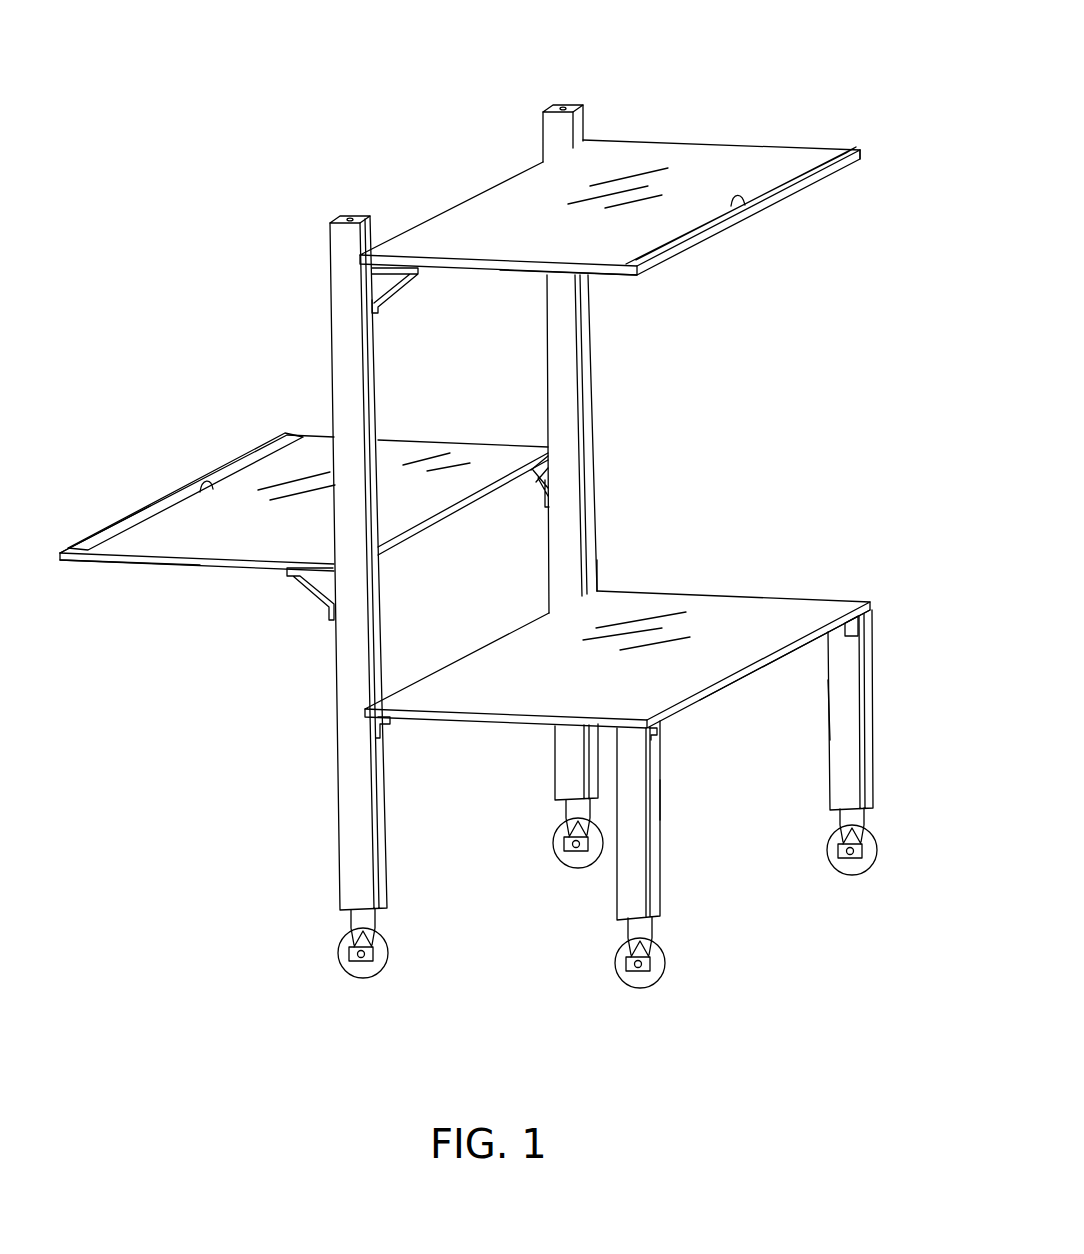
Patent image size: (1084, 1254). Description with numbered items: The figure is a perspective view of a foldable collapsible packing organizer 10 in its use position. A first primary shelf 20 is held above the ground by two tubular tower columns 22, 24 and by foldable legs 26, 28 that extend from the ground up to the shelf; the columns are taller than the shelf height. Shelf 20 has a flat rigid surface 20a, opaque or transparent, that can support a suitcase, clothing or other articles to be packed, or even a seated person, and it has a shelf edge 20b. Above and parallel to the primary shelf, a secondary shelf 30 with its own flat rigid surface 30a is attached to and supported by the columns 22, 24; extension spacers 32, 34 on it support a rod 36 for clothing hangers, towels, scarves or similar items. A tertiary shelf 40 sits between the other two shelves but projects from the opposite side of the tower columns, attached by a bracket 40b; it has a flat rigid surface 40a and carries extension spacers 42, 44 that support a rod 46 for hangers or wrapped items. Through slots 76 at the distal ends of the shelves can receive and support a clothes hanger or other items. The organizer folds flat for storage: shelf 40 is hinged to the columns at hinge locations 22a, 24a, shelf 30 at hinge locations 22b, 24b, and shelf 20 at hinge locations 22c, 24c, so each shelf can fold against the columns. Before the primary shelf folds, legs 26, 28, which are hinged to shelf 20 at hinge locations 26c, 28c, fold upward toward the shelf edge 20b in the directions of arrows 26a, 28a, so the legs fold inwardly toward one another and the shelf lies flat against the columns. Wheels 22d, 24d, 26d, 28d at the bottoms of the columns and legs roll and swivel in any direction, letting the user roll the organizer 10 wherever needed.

The foldable collapsible packing organizer 10 is at (393, 148).
The first primary shelf 20 is at (655, 633).
The flat rigid surface 20a is at (765, 595).
The shelf edge 20b is at (790, 643).
The tower column 22 is at (338, 803).
The hinge location 22a is at (330, 562).
The hinge location 22b is at (333, 256).
The hinge location 22c is at (336, 716).
The wheel 22d is at (390, 953).
The tower column 24 is at (556, 765).
The hinge location 24a is at (545, 482).
The hinge location 24b is at (600, 131).
The hinge location 24c is at (602, 585).
The wheel 24d is at (553, 840).
The foldable leg 26 is at (874, 775).
The arrow 26a is at (830, 733).
The hinge location 26c is at (860, 620).
The wheel 26d is at (880, 853).
The foldable leg 28 is at (663, 881).
The arrow 28a is at (686, 760).
The hinge location 28c is at (662, 727).
The wheel 28d is at (670, 965).
The secondary shelf 30 is at (646, 187).
The flat rigid surface 30a is at (633, 152).
The extension spacer 32 is at (638, 277).
The extension spacer 34 is at (862, 151).
The rod 36 is at (775, 199).
The tertiary shelf 40 is at (295, 508).
The flat rigid surface 40a is at (178, 525).
The bracket 40b is at (318, 590).
The extension spacer 42 is at (70, 563).
The extension spacer 44 is at (283, 434).
The rod 46 is at (93, 537).
The through slot 76 is at (738, 205).